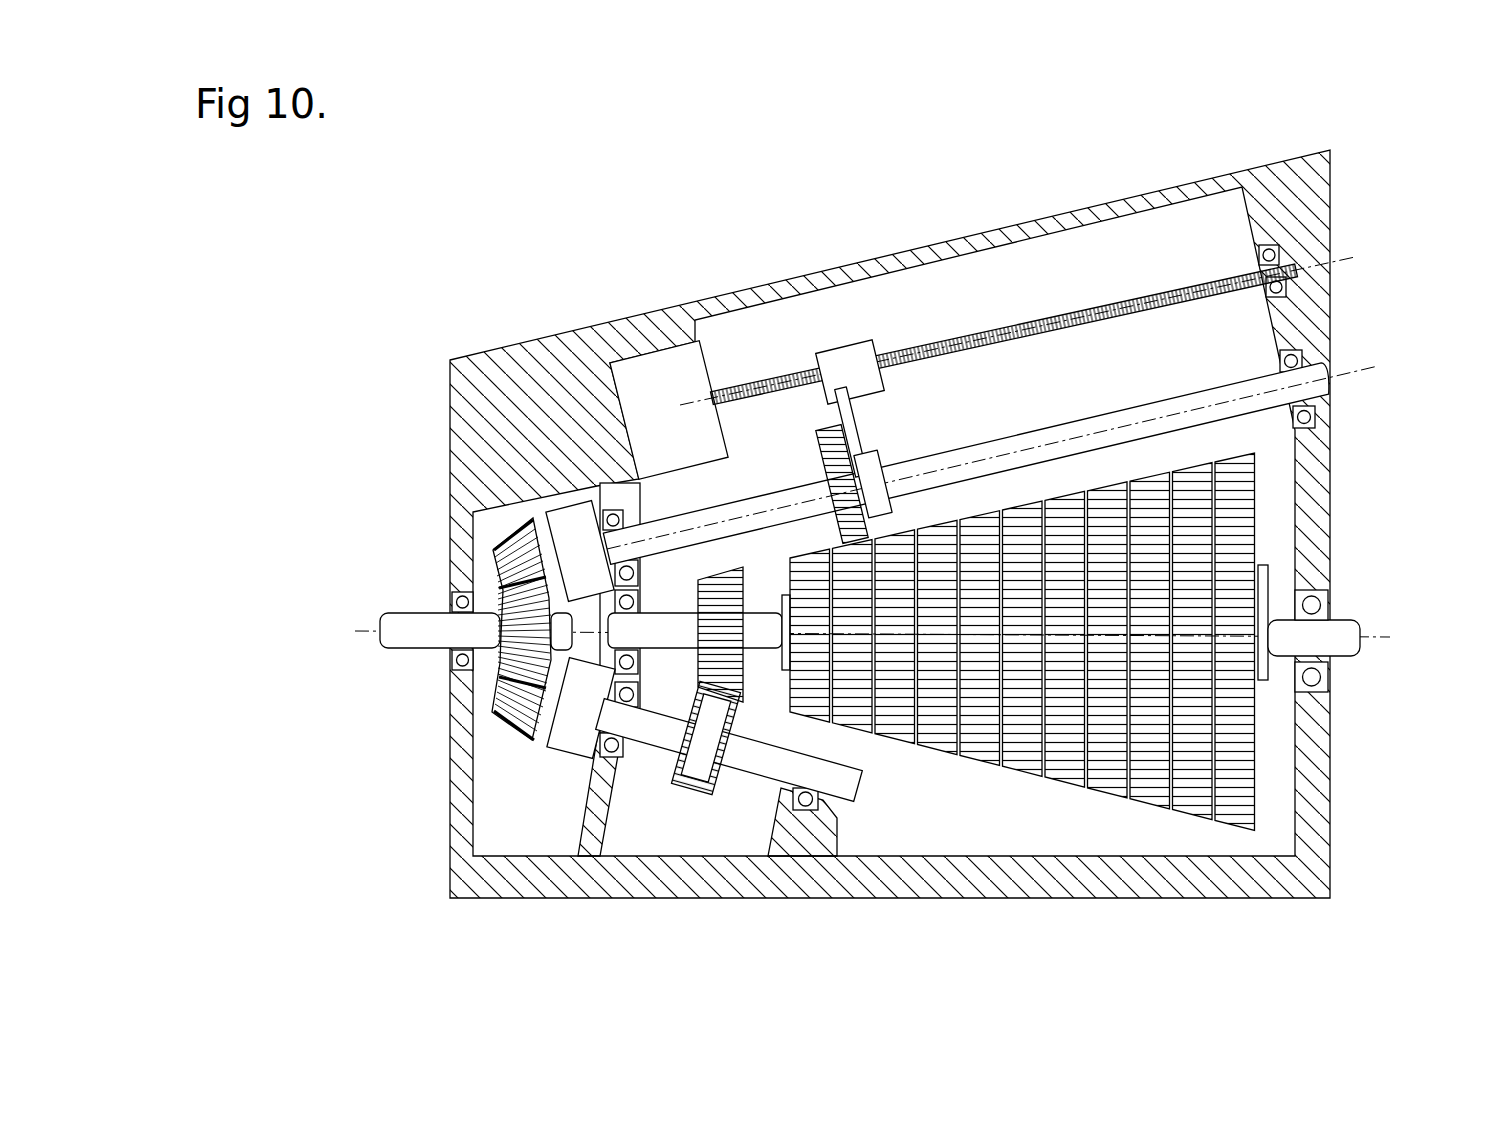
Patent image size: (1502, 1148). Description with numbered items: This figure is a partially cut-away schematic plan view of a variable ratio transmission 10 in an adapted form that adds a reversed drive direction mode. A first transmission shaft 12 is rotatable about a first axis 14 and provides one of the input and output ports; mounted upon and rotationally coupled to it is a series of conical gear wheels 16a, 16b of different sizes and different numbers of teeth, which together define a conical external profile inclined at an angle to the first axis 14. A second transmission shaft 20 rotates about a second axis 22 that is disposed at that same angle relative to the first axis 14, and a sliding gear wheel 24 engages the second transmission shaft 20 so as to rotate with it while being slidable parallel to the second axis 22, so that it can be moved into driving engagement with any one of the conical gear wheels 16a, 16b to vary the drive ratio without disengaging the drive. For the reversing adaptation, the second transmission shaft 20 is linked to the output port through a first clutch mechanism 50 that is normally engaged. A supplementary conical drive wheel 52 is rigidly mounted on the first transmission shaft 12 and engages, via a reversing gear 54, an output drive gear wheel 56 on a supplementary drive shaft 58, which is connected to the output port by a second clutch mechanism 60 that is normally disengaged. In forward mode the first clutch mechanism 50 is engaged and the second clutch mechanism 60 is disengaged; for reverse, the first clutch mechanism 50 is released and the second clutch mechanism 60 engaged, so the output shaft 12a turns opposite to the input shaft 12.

The variable ratio transmission 10 is at (277, 890).
The first transmission shaft 12 is at (1338, 652).
The output shaft 12a is at (405, 613).
The first axis 14 is at (1378, 637).
The conical gear wheel 16a is at (1228, 832).
The conical gear wheel 16b is at (1197, 825).
The second transmission shaft 20 is at (1293, 395).
The second axis 22 is at (1377, 368).
The sliding gear wheel 24 is at (820, 437).
The first clutch mechanism 50 is at (578, 540).
The supplementary conical drive wheel 52 is at (725, 595).
The reversing gear 54 is at (705, 737).
The output drive gear wheel 56 is at (690, 787).
The supplementary drive shaft 58 is at (640, 727).
The second clutch mechanism 60 is at (578, 718).